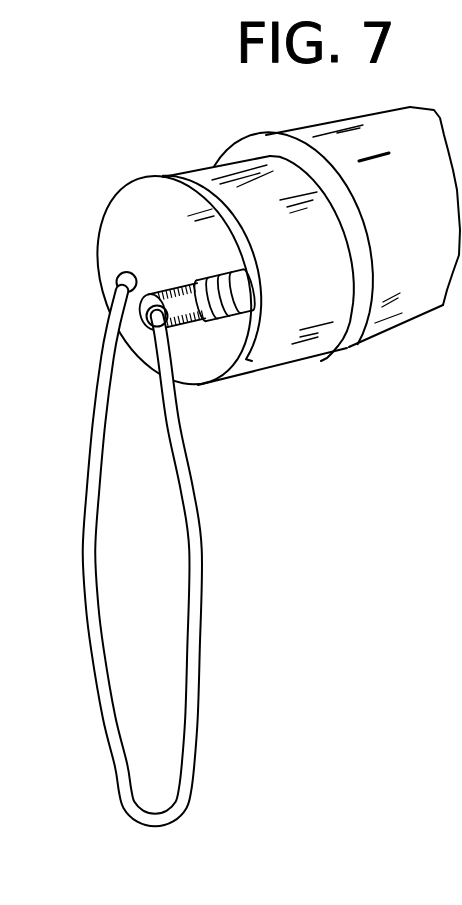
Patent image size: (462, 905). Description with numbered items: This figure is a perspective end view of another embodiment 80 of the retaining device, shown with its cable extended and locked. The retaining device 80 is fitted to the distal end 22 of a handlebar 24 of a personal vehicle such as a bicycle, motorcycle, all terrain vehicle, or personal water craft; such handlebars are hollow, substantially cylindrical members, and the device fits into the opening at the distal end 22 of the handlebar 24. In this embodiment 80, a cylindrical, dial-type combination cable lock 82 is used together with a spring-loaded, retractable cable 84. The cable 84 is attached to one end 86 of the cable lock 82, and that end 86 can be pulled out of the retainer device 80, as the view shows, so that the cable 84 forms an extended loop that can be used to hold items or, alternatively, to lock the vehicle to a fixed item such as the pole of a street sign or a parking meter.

The distal end 22 is at (326, 360).
The handlebar 24 is at (388, 128).
The retainer device embodiment 80 is at (175, 137).
The cable lock 82 is at (226, 272).
The retractable cable 84 is at (90, 437).
The end of the cable lock 86 is at (144, 301).